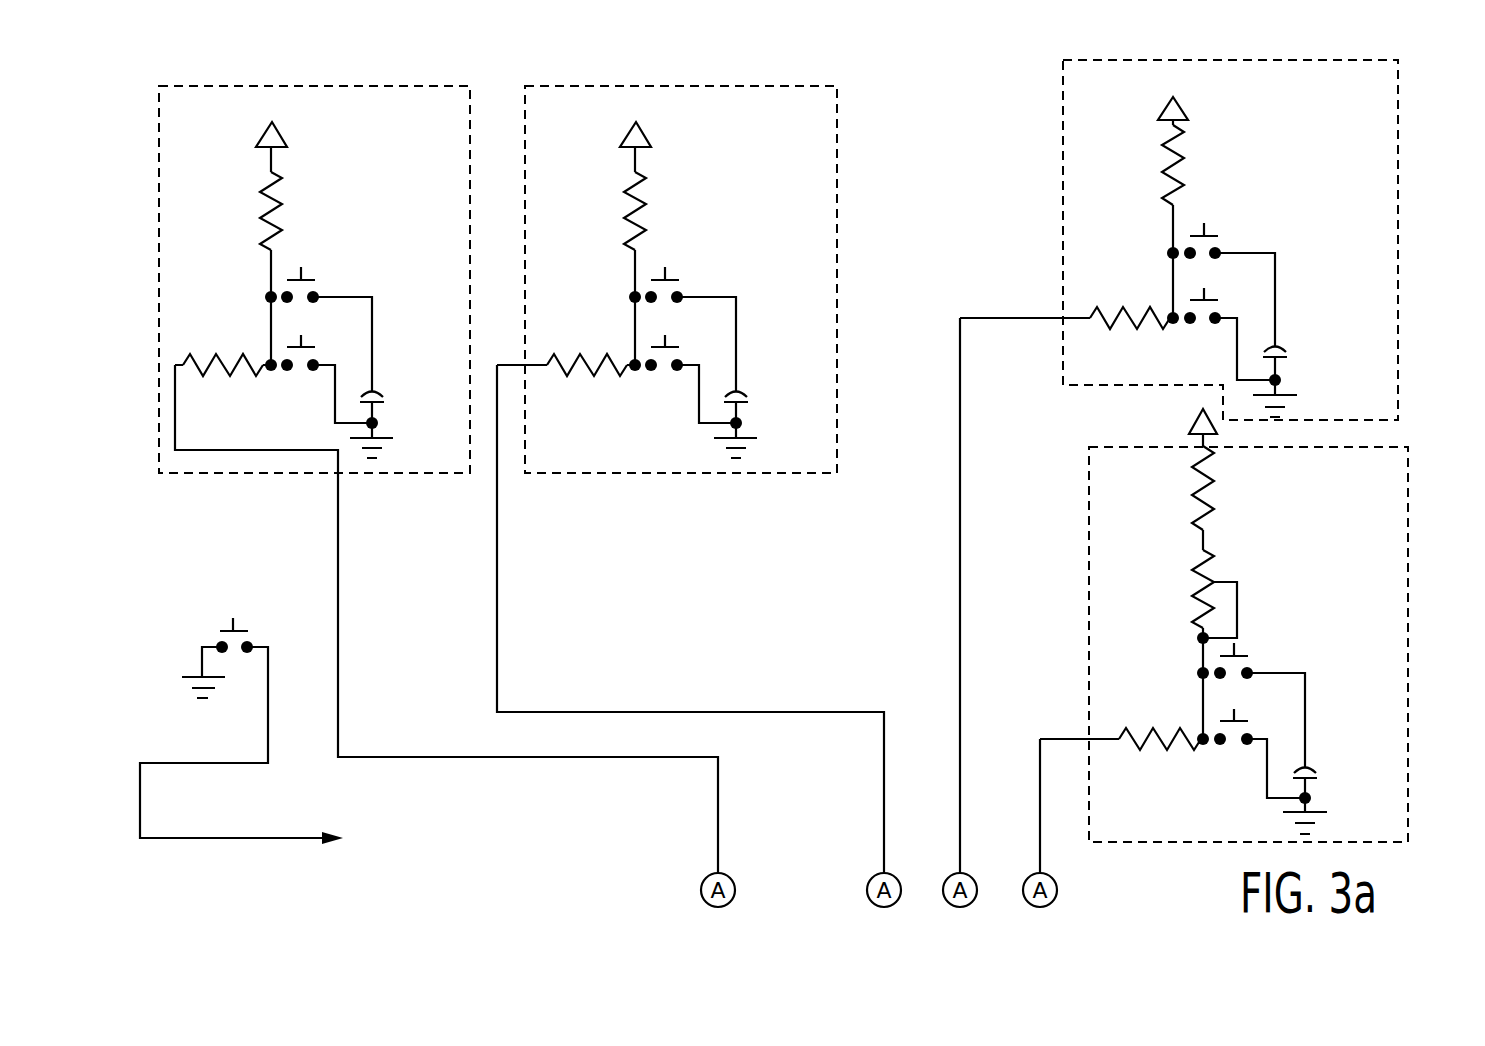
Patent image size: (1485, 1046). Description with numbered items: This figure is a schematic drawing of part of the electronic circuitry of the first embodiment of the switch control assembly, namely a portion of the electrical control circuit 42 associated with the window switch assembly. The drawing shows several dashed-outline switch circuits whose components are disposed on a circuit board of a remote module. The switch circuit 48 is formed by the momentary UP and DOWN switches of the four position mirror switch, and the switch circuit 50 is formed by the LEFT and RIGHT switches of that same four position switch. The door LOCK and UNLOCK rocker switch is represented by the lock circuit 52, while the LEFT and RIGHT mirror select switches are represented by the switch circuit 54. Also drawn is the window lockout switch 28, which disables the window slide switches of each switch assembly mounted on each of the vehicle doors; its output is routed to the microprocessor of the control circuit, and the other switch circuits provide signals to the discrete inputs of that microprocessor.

The window lockout switch 28 is at (207, 625).
The electrical control circuit 42 is at (1432, 488).
The switch circuit 48 is at (680, 474).
The switch circuit 50 is at (188, 474).
The lock circuit 52 is at (1410, 643).
The switch circuit 54 is at (1398, 240).